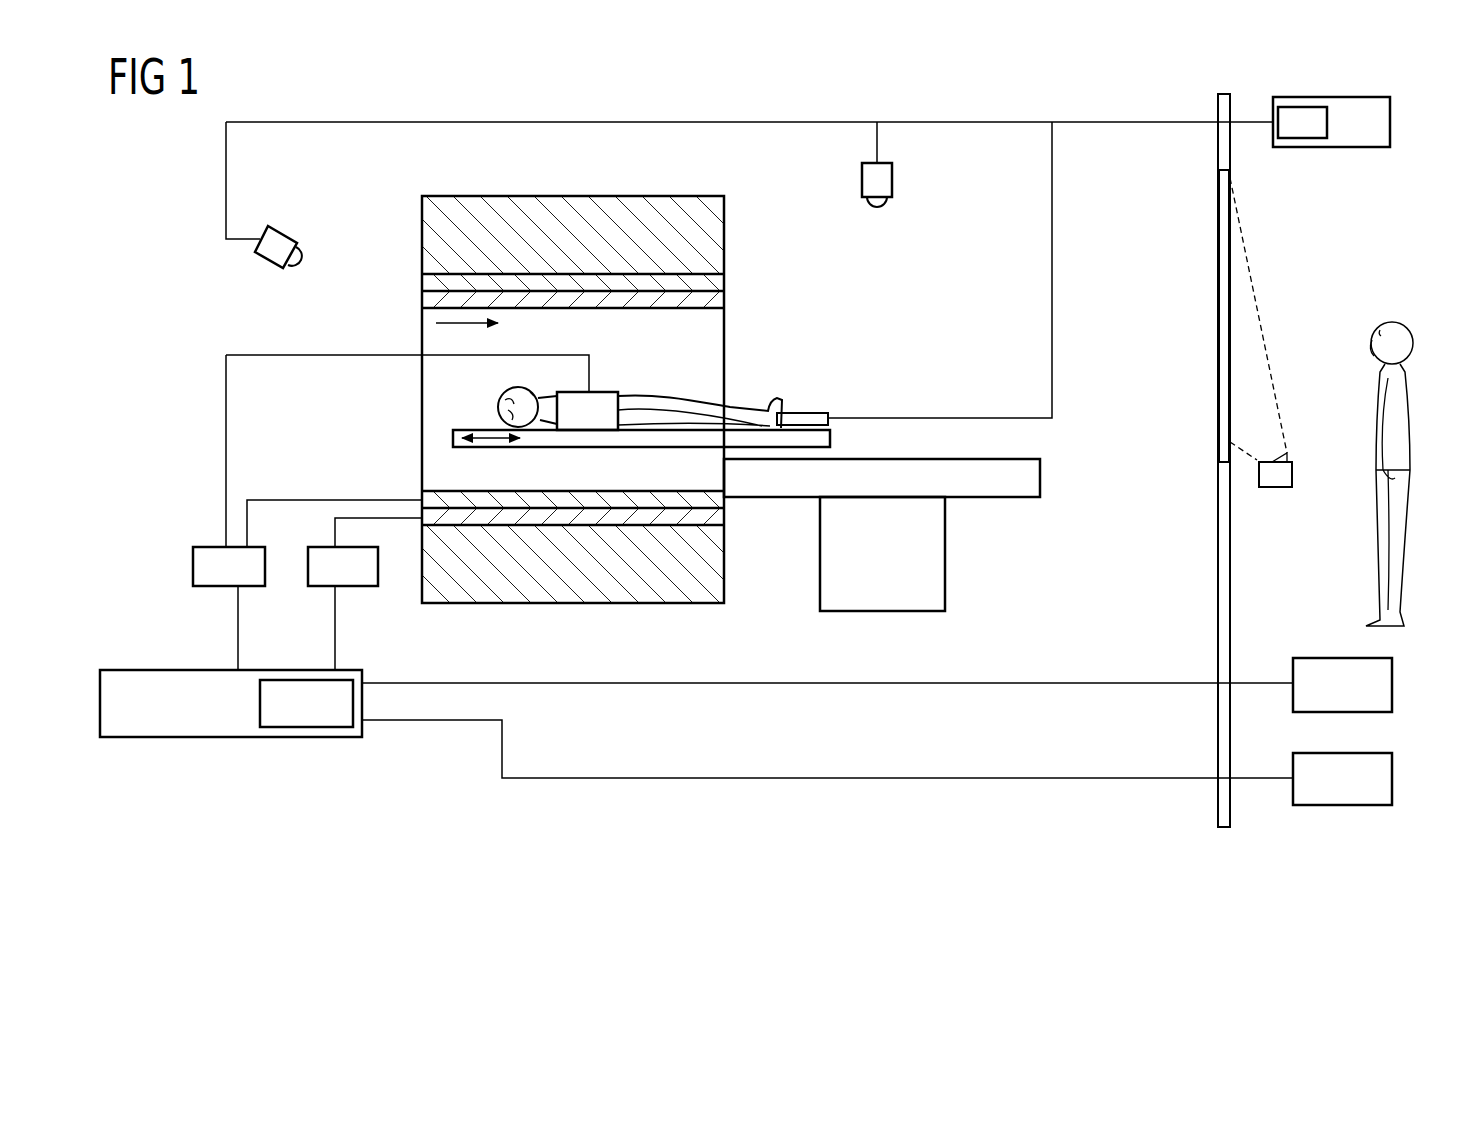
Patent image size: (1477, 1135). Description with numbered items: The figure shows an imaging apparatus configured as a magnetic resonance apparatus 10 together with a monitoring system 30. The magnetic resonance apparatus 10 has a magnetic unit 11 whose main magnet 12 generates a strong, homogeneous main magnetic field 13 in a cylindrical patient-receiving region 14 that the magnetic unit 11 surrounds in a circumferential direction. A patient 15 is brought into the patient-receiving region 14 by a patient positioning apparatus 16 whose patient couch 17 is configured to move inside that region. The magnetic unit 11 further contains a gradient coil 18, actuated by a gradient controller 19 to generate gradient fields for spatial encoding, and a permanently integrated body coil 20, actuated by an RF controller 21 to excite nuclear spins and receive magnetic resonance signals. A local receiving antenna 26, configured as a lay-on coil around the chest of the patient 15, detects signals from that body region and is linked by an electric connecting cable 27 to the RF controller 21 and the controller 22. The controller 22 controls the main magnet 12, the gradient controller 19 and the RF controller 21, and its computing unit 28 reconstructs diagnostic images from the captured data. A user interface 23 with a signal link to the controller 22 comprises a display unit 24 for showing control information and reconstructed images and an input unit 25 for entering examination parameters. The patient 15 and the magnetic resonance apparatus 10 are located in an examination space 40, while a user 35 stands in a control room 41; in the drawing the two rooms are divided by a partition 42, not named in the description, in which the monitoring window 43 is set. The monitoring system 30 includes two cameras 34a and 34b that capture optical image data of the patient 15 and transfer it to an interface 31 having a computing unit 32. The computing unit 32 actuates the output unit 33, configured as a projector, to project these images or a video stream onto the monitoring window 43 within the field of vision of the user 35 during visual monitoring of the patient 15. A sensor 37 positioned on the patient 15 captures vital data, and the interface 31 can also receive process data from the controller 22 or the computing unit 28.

The magnetic resonance apparatus 10 is at (878, 290).
The magnetic unit 11 is at (418, 240).
The main magnet 12 is at (706, 236).
The main magnetic field 13 is at (428, 332).
The patient-receiving region 14 is at (455, 376).
The patient 15 is at (735, 418).
The patient positioning apparatus 16 is at (972, 525).
The patient couch 17 is at (833, 438).
The gradient coil 18 is at (425, 284).
The gradient controller 19 is at (345, 588).
The body coil 20 is at (425, 297).
The RF controller 21 is at (249, 588).
The controller 22 is at (287, 739).
The user interface 23 is at (1330, 813).
The display unit 24 is at (1342, 685).
The input unit 25 is at (1342, 779).
The local receiving antenna 26 is at (600, 392).
The electric connecting cable 27 is at (262, 355).
The computing unit 28 is at (306, 703).
The monitoring system 30 is at (1395, 150).
The interface 31 is at (1345, 152).
The computing unit 32 is at (1283, 147).
The output unit 33 is at (1277, 492).
The camera 34a is at (243, 254).
The camera 34b is at (845, 180).
The user 35 is at (1410, 640).
The sensor 37 is at (810, 405).
The examination space 40 is at (1115, 290).
The control room 41 is at (1445, 290).
The wall 42 is at (1203, 823).
The monitoring window 43 is at (1210, 345).